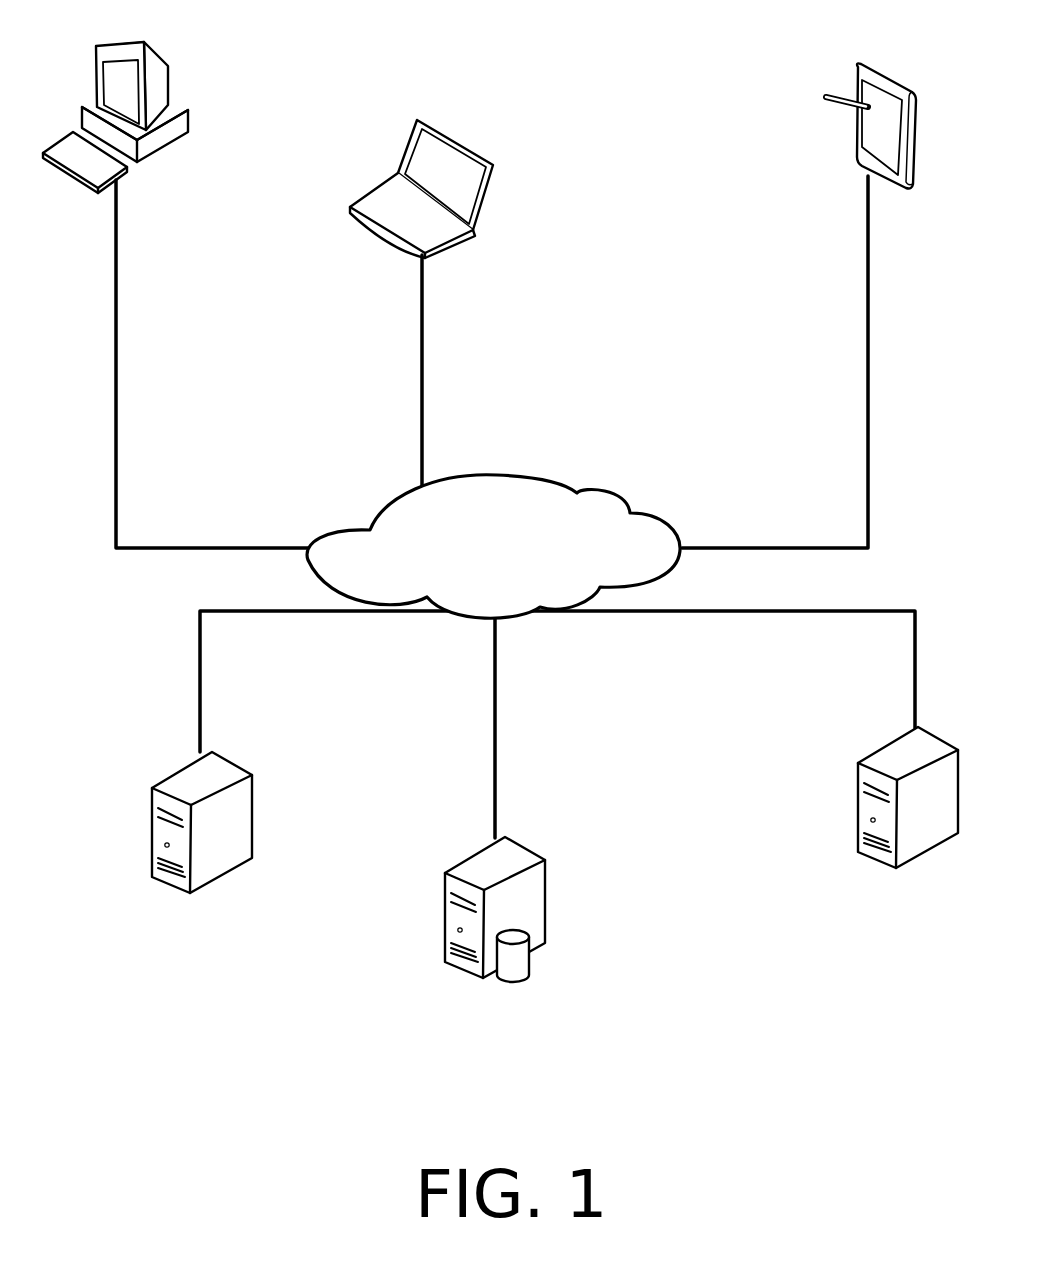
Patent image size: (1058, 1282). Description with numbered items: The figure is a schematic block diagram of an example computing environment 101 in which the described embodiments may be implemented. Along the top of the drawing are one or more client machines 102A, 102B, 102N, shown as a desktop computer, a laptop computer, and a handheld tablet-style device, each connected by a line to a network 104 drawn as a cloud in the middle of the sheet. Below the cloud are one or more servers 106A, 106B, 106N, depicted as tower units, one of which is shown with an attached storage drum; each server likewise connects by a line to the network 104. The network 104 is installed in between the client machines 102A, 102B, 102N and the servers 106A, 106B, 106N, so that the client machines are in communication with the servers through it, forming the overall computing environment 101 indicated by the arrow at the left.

The computing environment 101 is at (124, 622).
The client machine 102A is at (163, 63).
The client machine 102B is at (453, 138).
The client machine 102N is at (878, 82).
The network 104 is at (493, 546).
The server 106A is at (192, 893).
The server 106B is at (487, 978).
The server 106N is at (928, 857).